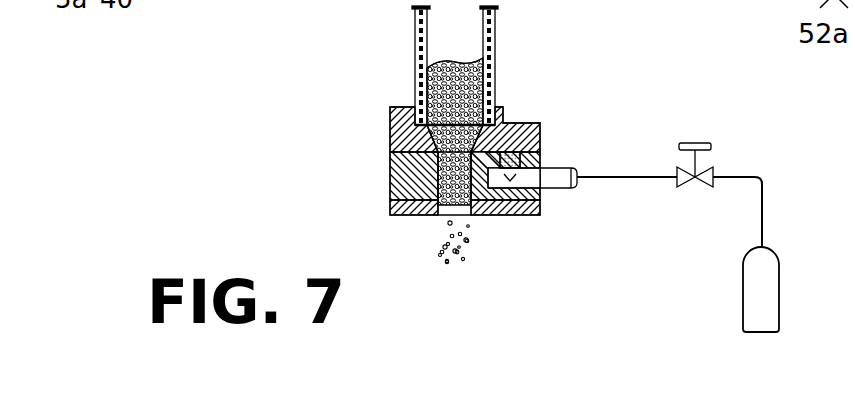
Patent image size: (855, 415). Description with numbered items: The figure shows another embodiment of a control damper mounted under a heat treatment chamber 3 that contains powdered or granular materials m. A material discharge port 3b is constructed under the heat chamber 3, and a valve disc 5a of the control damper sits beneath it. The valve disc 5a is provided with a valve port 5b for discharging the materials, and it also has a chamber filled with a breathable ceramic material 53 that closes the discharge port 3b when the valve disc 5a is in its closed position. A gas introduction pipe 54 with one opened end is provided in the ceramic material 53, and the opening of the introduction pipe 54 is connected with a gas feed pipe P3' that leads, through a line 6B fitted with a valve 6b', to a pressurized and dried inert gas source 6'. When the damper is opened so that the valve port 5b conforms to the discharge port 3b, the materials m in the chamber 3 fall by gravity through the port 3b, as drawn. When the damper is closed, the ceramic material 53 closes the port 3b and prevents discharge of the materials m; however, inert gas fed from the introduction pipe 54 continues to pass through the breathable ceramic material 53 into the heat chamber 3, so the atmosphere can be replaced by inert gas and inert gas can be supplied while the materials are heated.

The heat treatment chamber 3 is at (494, 42).
The powdered or granular materials m is at (425, 70).
The material discharge port 3b is at (408, 139).
The valve disc 5a is at (393, 187).
The breathable ceramic material 53 is at (511, 160).
The gas introduction pipe 54 is at (523, 189).
The valve port 5b is at (467, 241).
The gas feed pipe P3' is at (576, 156).
The gas supply pipe 6B is at (778, 205).
The valve 6b' is at (736, 155).
The pressurized and dried inert gas source 6' is at (786, 289).